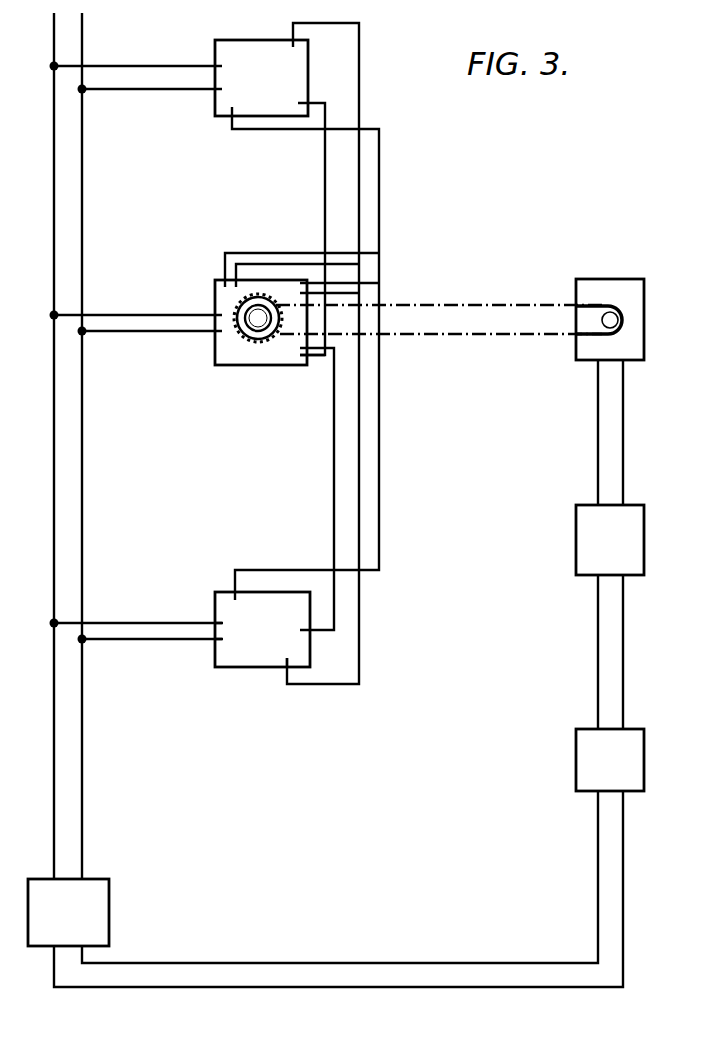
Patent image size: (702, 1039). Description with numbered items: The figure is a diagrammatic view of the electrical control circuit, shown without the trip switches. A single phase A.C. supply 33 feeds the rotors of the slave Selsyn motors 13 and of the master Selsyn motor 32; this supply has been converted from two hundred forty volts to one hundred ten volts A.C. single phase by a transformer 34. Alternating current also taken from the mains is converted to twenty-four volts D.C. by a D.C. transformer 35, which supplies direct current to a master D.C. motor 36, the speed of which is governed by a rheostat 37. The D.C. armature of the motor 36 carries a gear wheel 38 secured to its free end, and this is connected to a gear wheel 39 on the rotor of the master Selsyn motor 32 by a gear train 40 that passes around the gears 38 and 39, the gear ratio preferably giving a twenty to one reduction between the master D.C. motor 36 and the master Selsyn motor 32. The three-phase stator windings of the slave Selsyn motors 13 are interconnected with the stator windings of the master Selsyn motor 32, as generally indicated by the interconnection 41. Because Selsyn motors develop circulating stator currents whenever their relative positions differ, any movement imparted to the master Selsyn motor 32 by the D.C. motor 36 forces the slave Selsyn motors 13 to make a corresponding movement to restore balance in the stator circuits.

The slave Selsyn motors 13 is at (213, 107).
The master Selsyn motor 32 is at (241, 355).
The single phase A.C. supply 33 is at (54, 503).
The transformer 34 is at (74, 922).
The D.C. transformer 35 is at (621, 774).
The master D.C. motor 36 is at (600, 282).
The rheostat 37 is at (621, 552).
The gear wheel 38 is at (612, 328).
The gear wheel 39 is at (262, 330).
The gear train 40 is at (497, 305).
The stator winding interconnection 41 is at (385, 203).